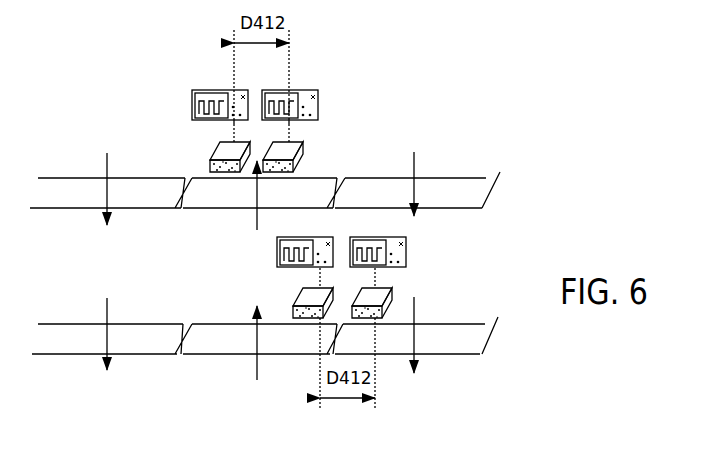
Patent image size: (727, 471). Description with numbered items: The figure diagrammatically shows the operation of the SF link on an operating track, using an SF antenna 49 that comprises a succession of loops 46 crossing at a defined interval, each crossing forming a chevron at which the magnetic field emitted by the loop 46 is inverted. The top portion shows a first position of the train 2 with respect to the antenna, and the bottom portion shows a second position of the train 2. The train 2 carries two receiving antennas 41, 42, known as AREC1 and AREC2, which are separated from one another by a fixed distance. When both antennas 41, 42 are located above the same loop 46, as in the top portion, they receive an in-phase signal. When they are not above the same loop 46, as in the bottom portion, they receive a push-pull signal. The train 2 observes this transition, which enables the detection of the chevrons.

The train 2 is at (315, 88).
The antenna 41 is at (217, 155).
The antenna 42 is at (293, 150).
The loop 46 is at (452, 187).
The SF antenna 49 is at (512, 193).